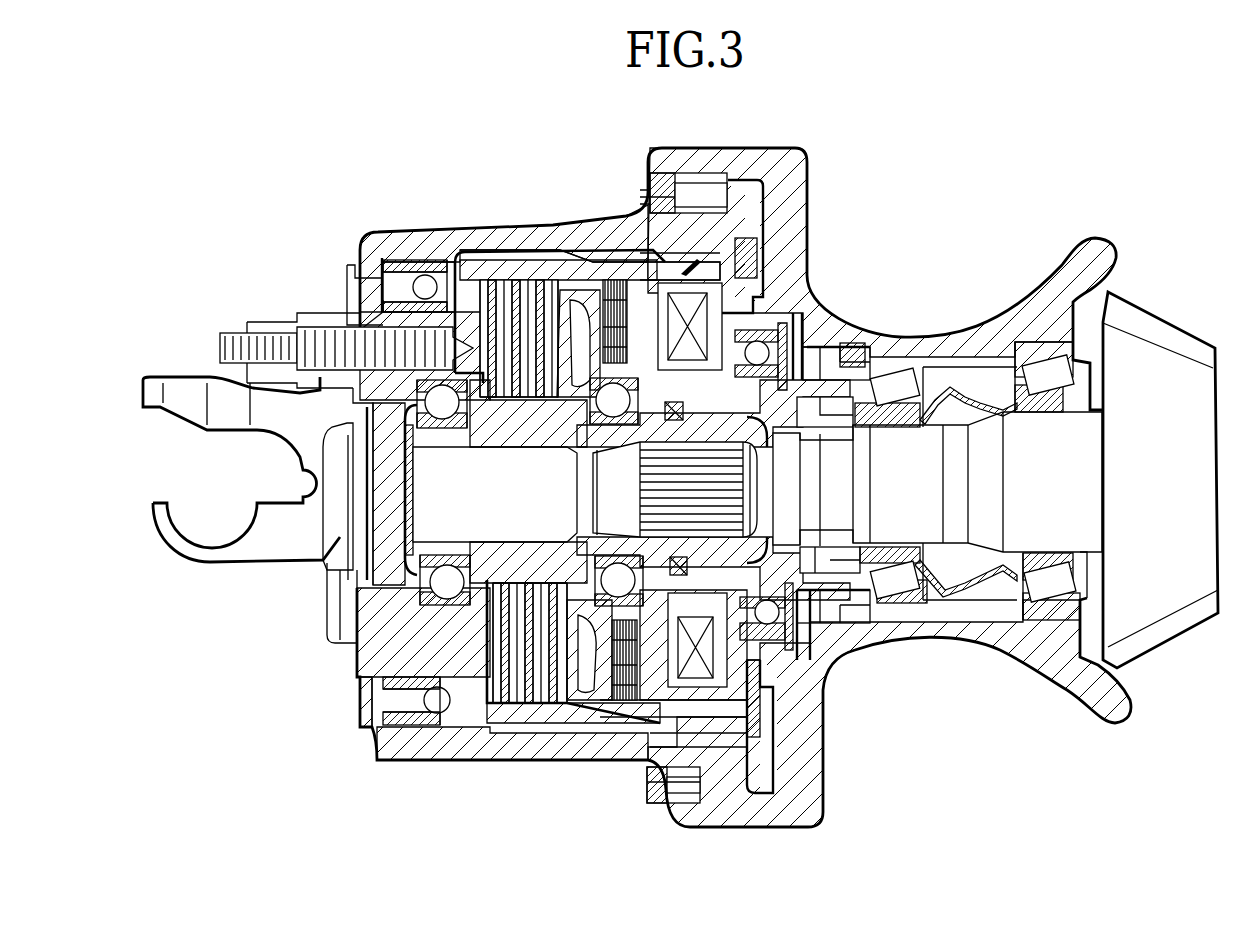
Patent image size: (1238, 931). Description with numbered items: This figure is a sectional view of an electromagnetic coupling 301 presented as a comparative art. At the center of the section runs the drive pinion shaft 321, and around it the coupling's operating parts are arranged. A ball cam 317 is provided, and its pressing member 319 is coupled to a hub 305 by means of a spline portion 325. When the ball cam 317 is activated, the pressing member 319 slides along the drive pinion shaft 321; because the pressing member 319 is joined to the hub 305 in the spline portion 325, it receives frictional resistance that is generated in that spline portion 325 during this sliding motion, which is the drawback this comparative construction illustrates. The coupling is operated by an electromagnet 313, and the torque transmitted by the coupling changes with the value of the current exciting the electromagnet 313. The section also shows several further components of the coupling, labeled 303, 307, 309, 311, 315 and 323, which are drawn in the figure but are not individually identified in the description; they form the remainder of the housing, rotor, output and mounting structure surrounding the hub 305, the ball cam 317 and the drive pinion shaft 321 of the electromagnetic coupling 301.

The electromagnetic coupling 301 is at (907, 170).
The housing 303 is at (470, 277).
The hub 305 is at (483, 432).
The stator 307 is at (512, 266).
The rotor 309 is at (608, 268).
The cover plate 311 is at (568, 262).
The electromagnet 313 is at (772, 302).
The resolver 315 is at (645, 625).
The ball cam 317 is at (617, 550).
The pressing member 319 is at (588, 680).
The drive pinion shaft 321 is at (910, 458).
The wheel disc 323 is at (1173, 337).
The spline portion 325 is at (565, 413).